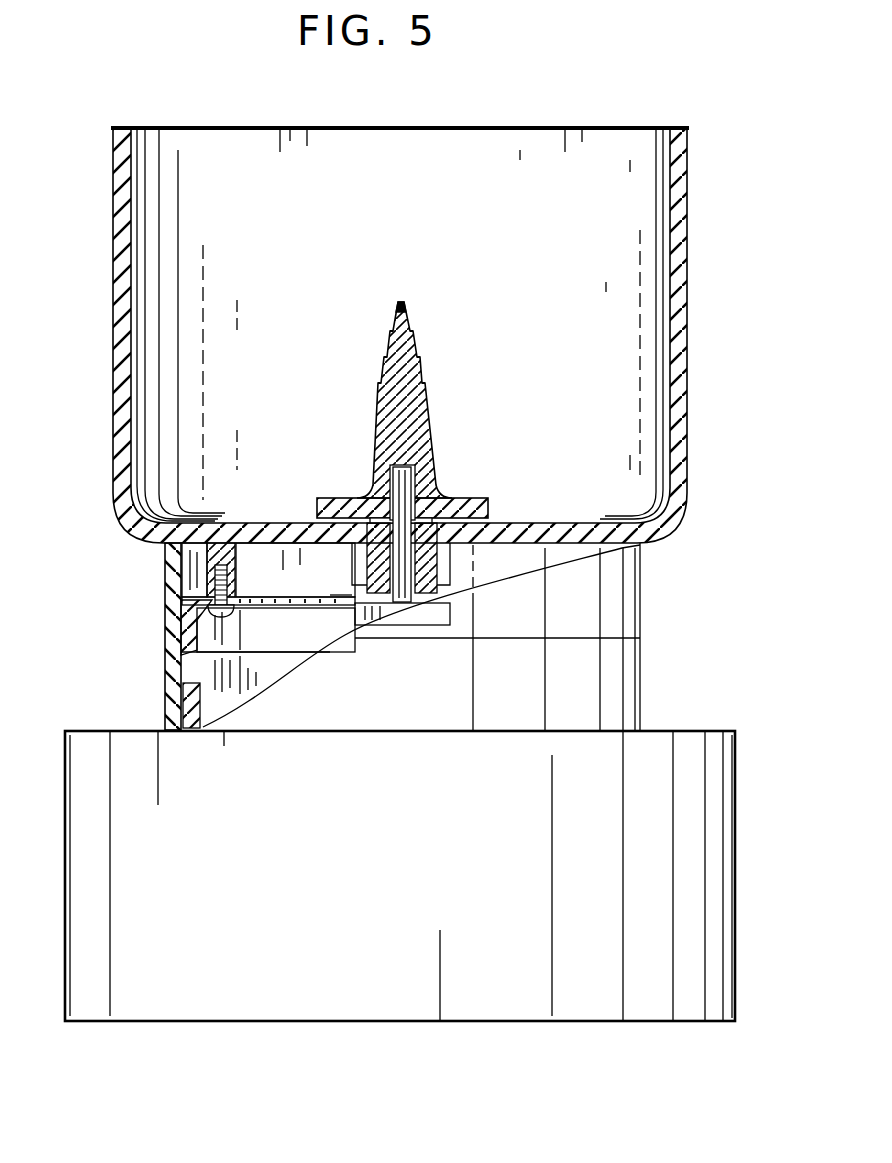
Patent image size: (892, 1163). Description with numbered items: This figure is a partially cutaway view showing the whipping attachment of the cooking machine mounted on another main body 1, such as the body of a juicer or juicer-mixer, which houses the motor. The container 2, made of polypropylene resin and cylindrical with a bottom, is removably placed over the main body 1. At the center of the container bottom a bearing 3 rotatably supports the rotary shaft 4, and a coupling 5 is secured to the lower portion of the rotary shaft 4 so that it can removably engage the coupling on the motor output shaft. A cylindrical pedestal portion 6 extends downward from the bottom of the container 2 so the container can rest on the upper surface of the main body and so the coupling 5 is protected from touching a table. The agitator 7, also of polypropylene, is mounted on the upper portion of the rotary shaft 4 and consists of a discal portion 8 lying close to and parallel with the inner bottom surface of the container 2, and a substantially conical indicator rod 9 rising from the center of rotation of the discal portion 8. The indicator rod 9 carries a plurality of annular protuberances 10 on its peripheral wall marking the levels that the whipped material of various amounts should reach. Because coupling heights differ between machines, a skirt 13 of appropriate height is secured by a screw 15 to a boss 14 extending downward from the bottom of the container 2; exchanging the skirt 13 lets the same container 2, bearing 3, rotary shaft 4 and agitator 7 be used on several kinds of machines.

The mixer body 1 is at (737, 851).
The container 2 is at (686, 324).
The bearing 3 is at (437, 561).
The rotary shaft 4 is at (398, 590).
The coupling 5 is at (377, 612).
The pedestal portion 6 is at (165, 569).
The agitator 7 is at (451, 421).
The discal portion 8 is at (477, 498).
The indicator rod 9 is at (401, 300).
The annular protuberances 10 is at (387, 380).
The skirt 13 is at (165, 674).
The boss 14 is at (248, 560).
The screw 15 is at (229, 618).